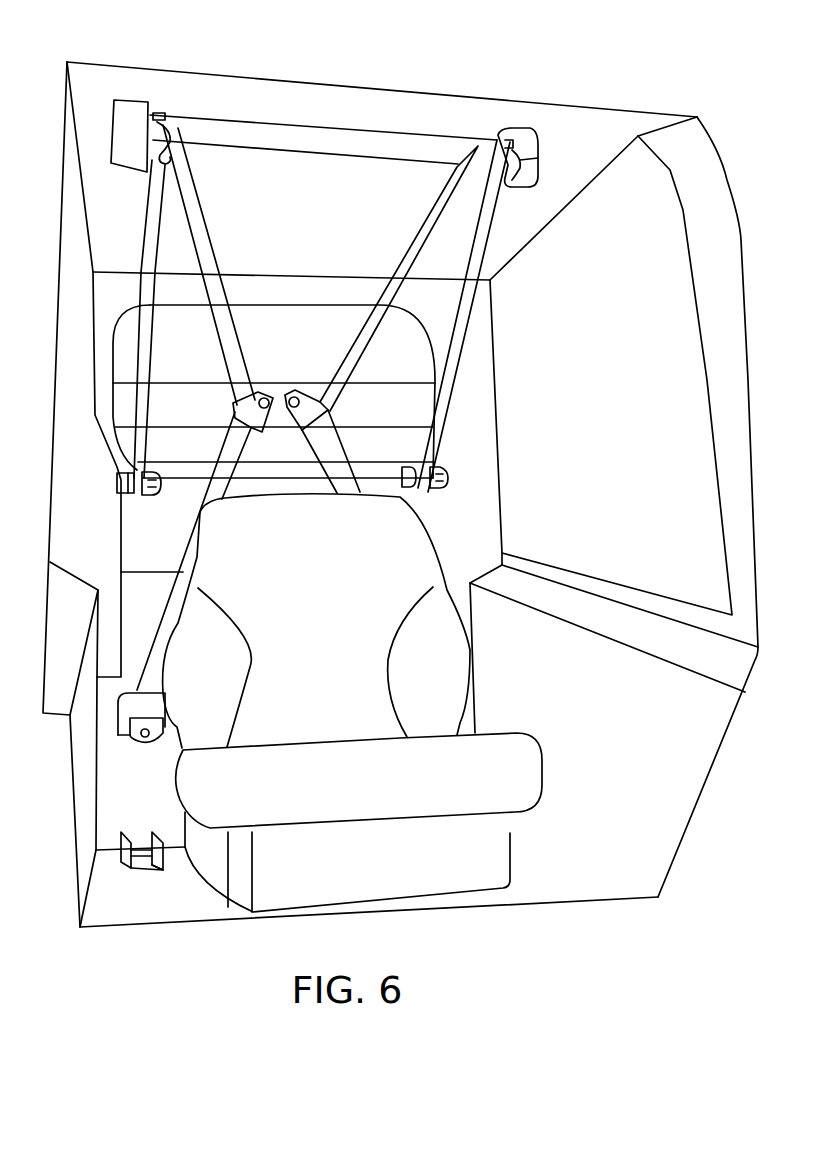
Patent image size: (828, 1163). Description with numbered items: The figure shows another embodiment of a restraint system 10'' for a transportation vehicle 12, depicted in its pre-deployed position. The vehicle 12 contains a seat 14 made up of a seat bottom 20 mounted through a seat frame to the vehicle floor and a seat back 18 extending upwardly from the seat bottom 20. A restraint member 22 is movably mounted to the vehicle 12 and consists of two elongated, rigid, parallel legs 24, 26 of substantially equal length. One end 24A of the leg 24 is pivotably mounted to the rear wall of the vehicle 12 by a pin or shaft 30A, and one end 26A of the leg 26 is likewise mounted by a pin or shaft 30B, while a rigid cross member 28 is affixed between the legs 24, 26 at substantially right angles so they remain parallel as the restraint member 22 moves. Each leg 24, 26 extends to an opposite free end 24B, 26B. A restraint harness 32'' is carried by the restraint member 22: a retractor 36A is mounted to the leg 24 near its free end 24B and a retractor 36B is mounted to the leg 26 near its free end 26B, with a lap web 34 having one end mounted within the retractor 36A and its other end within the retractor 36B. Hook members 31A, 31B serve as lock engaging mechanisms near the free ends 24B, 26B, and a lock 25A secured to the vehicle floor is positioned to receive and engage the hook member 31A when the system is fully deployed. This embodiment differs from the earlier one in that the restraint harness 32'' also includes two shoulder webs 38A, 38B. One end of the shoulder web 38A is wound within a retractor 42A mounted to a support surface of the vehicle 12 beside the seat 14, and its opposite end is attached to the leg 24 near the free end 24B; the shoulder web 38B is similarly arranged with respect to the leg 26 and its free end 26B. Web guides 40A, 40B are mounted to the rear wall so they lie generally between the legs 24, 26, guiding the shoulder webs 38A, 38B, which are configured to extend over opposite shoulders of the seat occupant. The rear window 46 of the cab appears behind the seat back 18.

The restraint system 10'' is at (400, 494).
The transportation vehicle 12 is at (660, 663).
The vehicle seat 14 is at (401, 703).
The seat back 18 is at (298, 645).
The seat bottom 20 is at (351, 796).
The restraint member 22 is at (331, 491).
The leg 24 is at (141, 236).
The end of leg 24A is at (137, 494).
The free end of leg 24B is at (157, 113).
The lock 25A is at (143, 878).
The leg 26 is at (474, 308).
The end of leg 26A is at (420, 494).
The free end of leg 26B is at (502, 130).
The cross member 28 is at (299, 480).
The pin or shaft 30A is at (160, 496).
The pin or shaft 30B is at (448, 476).
The hook member 31A is at (155, 142).
The hook member 31B is at (521, 167).
The restraint harness 32'' is at (323, 85).
The lap web 34 is at (338, 160).
The retractor 36A is at (130, 100).
The retractor 36B is at (533, 137).
The shoulder web 38A is at (217, 241).
The shoulder web 38B is at (401, 254).
The web guide 40A is at (259, 394).
The web guide 40B is at (301, 394).
The retractor 42A is at (124, 736).
The rear window 46 is at (384, 383).